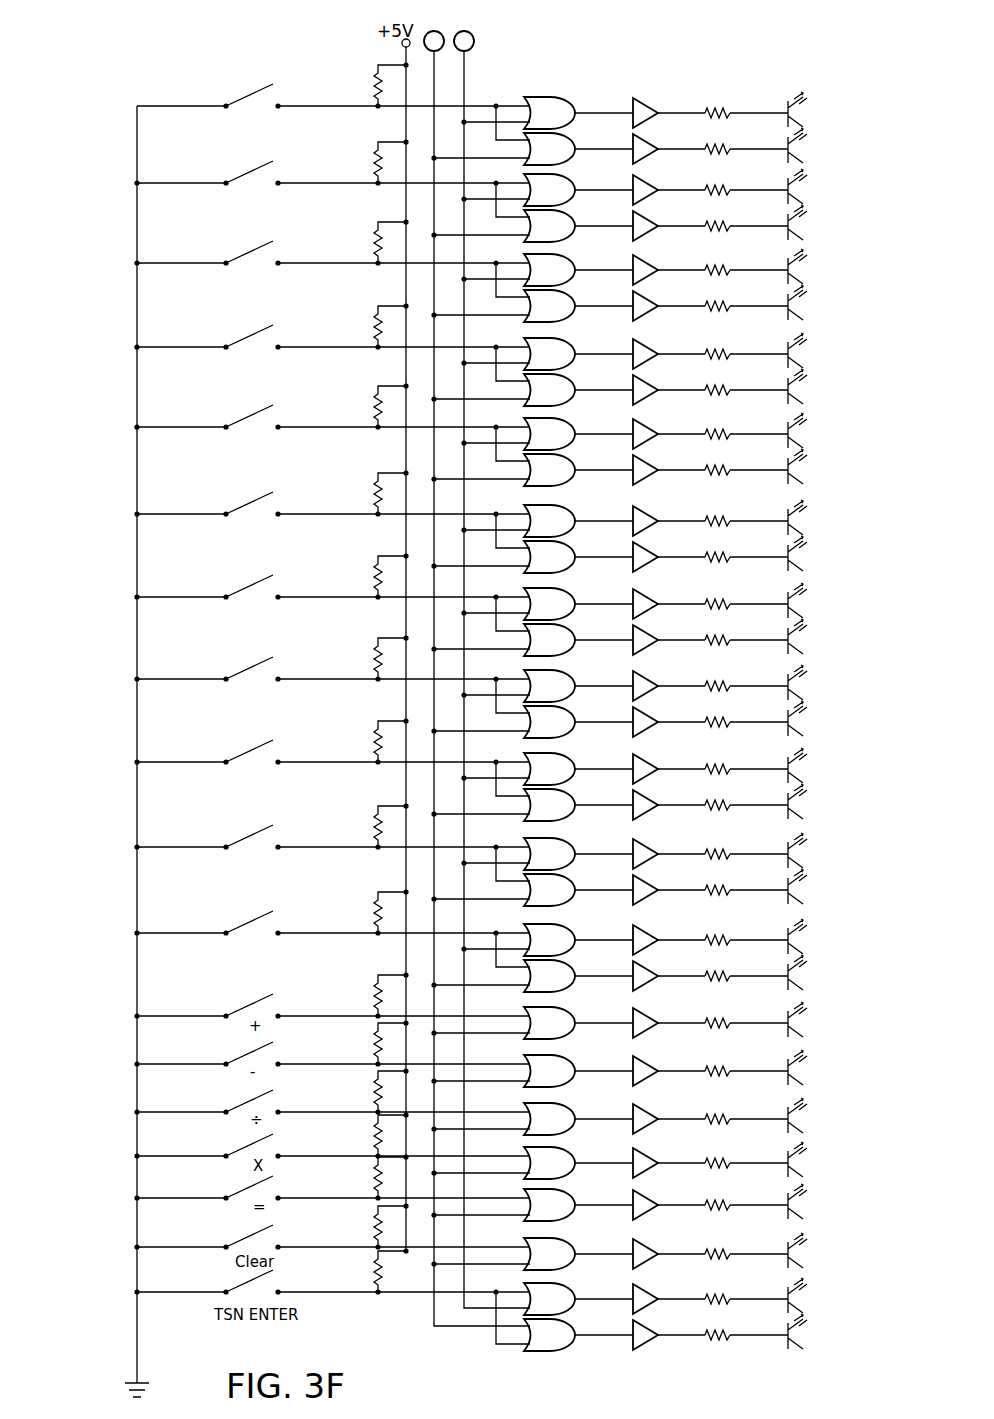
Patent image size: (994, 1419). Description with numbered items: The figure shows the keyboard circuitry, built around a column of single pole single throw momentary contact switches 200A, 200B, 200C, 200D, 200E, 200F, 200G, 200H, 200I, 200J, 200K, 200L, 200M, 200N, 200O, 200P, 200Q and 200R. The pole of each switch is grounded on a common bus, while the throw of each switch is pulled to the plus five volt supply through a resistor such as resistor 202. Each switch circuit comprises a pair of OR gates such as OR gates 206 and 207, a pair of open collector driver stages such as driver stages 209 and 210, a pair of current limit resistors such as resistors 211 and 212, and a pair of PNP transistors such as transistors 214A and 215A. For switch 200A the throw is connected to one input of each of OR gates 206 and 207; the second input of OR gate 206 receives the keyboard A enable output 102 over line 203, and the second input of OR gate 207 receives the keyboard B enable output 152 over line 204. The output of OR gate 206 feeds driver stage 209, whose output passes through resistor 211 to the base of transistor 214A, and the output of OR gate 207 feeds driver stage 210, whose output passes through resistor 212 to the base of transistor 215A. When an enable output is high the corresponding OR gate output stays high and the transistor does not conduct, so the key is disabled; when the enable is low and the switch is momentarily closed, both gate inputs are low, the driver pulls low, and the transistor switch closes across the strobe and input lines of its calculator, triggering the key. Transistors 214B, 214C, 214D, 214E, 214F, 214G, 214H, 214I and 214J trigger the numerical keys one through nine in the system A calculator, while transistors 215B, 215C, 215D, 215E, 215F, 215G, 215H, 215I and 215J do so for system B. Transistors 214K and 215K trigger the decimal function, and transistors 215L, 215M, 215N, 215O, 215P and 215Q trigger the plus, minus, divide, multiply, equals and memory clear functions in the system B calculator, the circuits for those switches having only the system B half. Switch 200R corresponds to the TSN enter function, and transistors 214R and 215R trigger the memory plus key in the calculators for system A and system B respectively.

The switch 200A is at (137, 106).
The switch 200B is at (300, 177).
The switch 200C is at (300, 257).
The switch 200D is at (300, 341).
The switch 200E is at (300, 421).
The switch 200F is at (300, 508).
The switch 200G is at (300, 591).
The switch 200H is at (300, 673).
The switch 200I is at (301, 756).
The switch 200J is at (300, 841).
The switch 200K is at (300, 927).
The switch 200L is at (300, 1010).
The switch 200M is at (300, 1058).
The switch 200N is at (300, 1106).
The switch 200O is at (300, 1150).
The switch 200P is at (300, 1192).
The switch 200Q is at (300, 1241).
The switch 200R is at (300, 1307).
The pull-up resistor 202 is at (374, 88).
The line 203 is at (465, 62).
The line 204 is at (435, 80).
The keyboard B enable output 152 is at (438, 32).
The keyboard A enable output 102 is at (468, 32).
The OR gate 206 is at (552, 97).
The OR gate 207 is at (567, 138).
The driver stage 209 is at (645, 98).
The driver stage 210 is at (652, 141).
The current limit resistor 211 is at (716, 108).
The current limit resistor 212 is at (719, 149).
The transistor 214A is at (800, 116).
The transistor 214B is at (800, 193).
The transistor 214C is at (800, 273).
The transistor 214D is at (800, 357).
The transistor 214E is at (800, 437).
The transistor 214F is at (800, 524).
The transistor 214G is at (800, 607).
The transistor 214H is at (800, 689).
The transistor 214I is at (800, 772).
The transistor 214J is at (800, 857).
The transistor 214K is at (800, 943).
The transistor 214R is at (800, 1302).
The transistor 215A is at (800, 152).
The transistor 215B is at (800, 229).
The transistor 215C is at (800, 309).
The transistor 215D is at (800, 393).
The transistor 215E is at (800, 473).
The transistor 215F is at (800, 560).
The transistor 215G is at (800, 643).
The transistor 215H is at (800, 725).
The transistor 215I is at (800, 808).
The transistor 215J is at (800, 893).
The transistor 215K is at (800, 979).
The transistor 215L is at (800, 1026).
The transistor 215M is at (800, 1074).
The transistor 215N is at (800, 1122).
The transistor 215O is at (800, 1166).
The transistor 215P is at (800, 1208).
The transistor 215Q is at (800, 1257).
The transistor 215R is at (800, 1338).